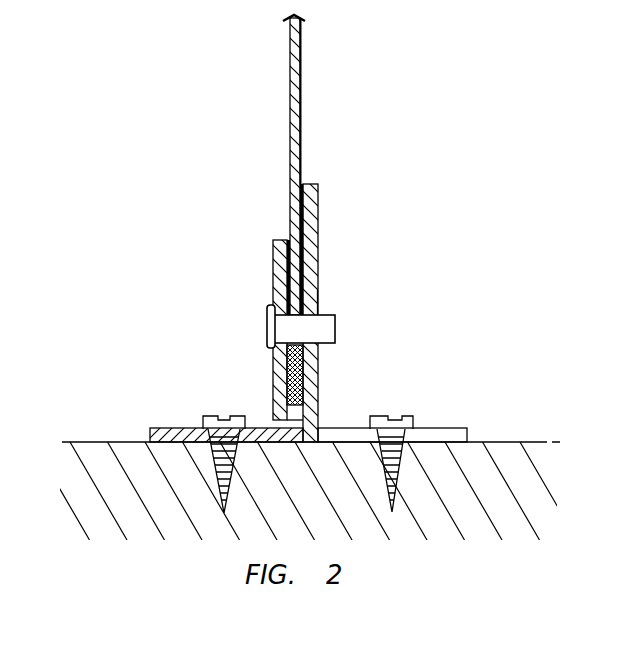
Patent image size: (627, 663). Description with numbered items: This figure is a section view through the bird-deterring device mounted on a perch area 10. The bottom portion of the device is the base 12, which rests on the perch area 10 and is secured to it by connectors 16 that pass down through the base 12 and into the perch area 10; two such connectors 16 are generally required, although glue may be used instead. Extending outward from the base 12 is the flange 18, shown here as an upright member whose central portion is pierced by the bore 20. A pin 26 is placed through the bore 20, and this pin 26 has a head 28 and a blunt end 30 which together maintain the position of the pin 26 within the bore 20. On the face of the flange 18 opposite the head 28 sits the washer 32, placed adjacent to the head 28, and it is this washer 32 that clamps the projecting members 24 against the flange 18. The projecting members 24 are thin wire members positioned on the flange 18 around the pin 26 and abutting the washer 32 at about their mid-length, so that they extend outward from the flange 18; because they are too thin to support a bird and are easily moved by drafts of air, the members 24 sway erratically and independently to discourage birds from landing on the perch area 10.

The perch area 10 is at (546, 442).
The base 12 is at (470, 428).
The connectors 16 is at (206, 414).
The flange 18 is at (318, 200).
The bore 20 is at (318, 300).
The projecting members 24 is at (302, 144).
The pin 26 is at (318, 355).
The head 28 is at (267, 334).
The blunt end 30 is at (335, 325).
The washer 32 is at (273, 262).